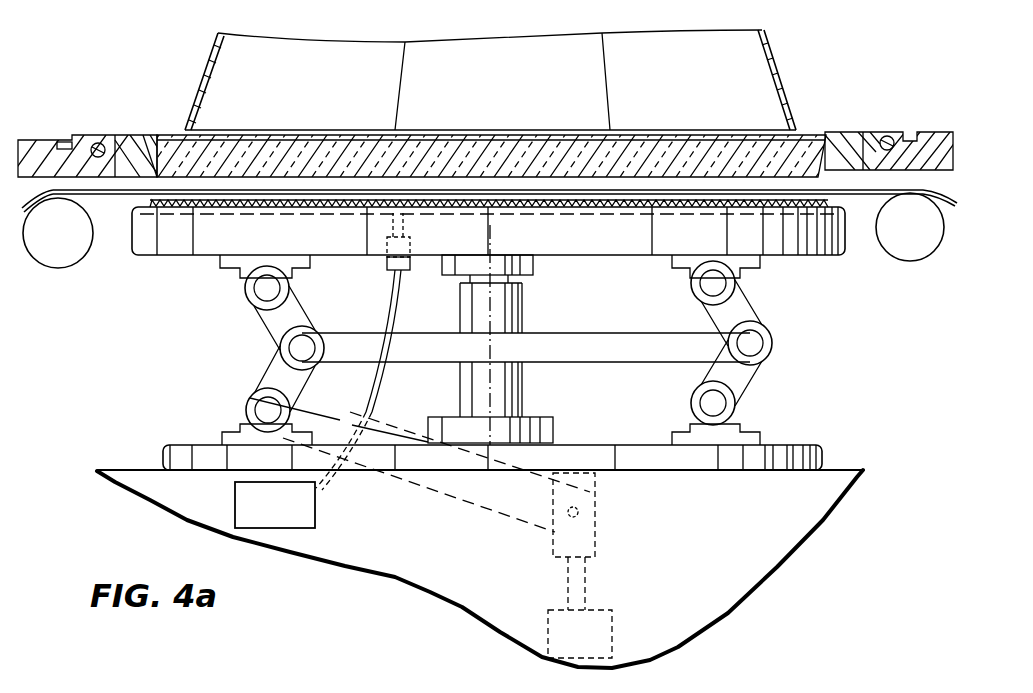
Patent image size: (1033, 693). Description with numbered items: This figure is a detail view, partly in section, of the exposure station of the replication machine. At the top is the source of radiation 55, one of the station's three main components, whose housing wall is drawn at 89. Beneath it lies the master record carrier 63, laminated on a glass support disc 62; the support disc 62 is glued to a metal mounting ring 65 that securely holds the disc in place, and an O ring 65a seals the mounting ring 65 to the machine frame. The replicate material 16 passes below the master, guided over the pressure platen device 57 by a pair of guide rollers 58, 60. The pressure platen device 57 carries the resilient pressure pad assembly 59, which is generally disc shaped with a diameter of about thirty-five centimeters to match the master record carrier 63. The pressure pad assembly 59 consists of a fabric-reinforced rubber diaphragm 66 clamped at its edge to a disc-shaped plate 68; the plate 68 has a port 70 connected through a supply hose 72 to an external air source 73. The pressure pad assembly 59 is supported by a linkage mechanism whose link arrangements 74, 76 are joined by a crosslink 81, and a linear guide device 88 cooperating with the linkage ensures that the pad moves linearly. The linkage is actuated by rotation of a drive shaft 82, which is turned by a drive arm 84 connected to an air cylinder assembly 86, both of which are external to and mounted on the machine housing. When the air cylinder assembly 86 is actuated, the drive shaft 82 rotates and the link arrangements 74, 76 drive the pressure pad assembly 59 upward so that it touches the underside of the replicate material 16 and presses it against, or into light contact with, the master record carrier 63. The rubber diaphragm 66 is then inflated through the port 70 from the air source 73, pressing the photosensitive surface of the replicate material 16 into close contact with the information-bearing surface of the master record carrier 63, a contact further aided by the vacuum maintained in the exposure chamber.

The source of radiation 55 is at (788, 82).
The container side wall 89 is at (767, 112).
The glass support disc 62 is at (522, 147).
The master record carrier 63 is at (700, 147).
The metal mounting ring 65 is at (875, 127).
The O ring 65a is at (896, 135).
The replicate material 16 is at (863, 194).
The guide roller 58 is at (72, 257).
The guide roller 60 is at (913, 252).
The pressure pad assembly 59 is at (625, 240).
The fabric-reinforced rubber diaphragm 66 is at (283, 213).
The disc-shaped plate 68 is at (358, 247).
The port 70 is at (403, 230).
The supply hose 72 is at (400, 297).
The linear guide device 88 is at (518, 317).
The pressure platen device 57 is at (473, 350).
The link arrangement 74 is at (267, 325).
The link arrangement 76 is at (753, 310).
The crosslink 81 is at (638, 348).
The drive shaft 82 is at (257, 405).
The air source 73 is at (235, 497).
The drive arm 84 is at (502, 513).
The air cylinder assembly 86 is at (608, 628).